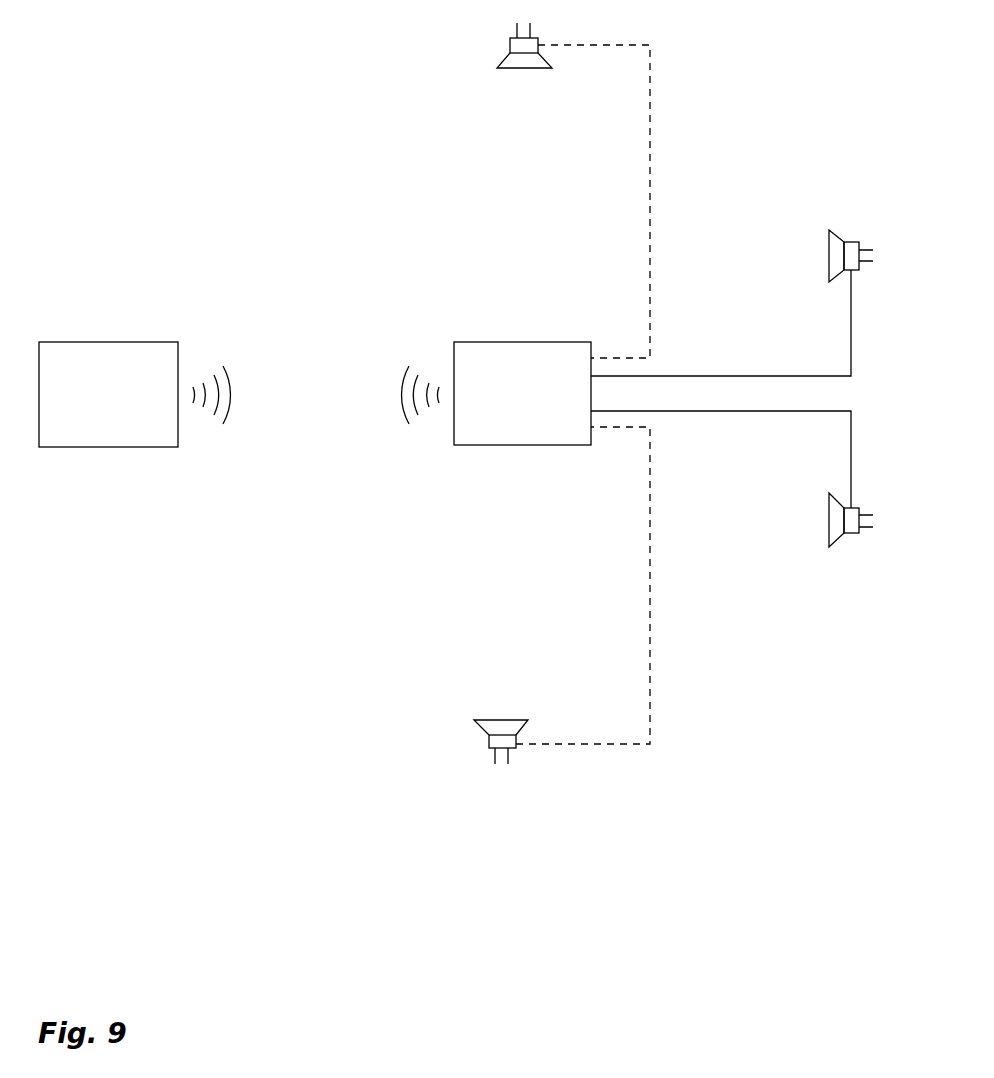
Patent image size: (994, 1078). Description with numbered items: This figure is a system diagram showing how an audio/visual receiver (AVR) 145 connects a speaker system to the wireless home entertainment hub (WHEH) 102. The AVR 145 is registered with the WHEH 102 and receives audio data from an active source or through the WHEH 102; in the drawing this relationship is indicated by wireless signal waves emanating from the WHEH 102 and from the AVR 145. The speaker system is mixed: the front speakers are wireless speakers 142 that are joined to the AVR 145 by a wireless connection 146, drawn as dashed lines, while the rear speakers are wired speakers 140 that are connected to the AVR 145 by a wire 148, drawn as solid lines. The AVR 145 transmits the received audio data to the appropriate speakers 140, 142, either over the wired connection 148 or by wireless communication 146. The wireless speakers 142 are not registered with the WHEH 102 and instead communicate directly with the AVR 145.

The wireless home entertainment hub (WHEH) 102 is at (98, 342).
The audio/visual receiver (AVR) 145 is at (473, 342).
The wireless speakers 142 is at (510, 45).
The wireless connection 146 is at (652, 101).
The wire 148 is at (739, 376).
The wired speakers 140 is at (851, 242).